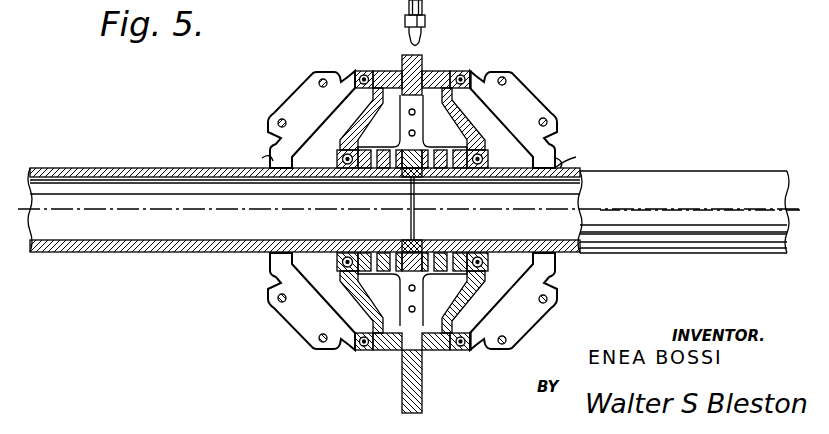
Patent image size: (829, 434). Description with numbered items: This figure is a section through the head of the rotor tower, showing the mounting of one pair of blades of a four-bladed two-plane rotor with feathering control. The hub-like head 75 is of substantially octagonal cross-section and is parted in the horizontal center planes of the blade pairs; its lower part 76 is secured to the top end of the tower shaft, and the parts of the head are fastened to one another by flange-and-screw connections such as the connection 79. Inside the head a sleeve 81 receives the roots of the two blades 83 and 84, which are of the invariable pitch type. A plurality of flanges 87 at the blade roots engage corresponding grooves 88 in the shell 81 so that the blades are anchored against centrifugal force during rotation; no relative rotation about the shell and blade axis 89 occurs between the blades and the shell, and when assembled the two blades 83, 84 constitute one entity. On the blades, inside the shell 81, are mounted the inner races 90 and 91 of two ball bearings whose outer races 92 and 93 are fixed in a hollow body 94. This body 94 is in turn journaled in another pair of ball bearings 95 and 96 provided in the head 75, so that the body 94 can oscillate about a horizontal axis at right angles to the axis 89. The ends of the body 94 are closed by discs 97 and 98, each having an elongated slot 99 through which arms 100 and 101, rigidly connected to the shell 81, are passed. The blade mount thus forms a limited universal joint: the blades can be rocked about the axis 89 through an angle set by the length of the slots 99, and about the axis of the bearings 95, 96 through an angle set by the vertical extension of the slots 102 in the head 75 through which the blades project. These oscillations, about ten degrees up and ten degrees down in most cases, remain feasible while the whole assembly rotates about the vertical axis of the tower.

The head 75 is at (569, 140).
The lower part 76 is at (552, 262).
The flange-and-screw connection 79 is at (532, 311).
The sleeve 81 is at (455, 148).
The blade 83 is at (145, 230).
The blade 84 is at (689, 243).
The flange 87 is at (431, 255).
The groove 88 is at (385, 252).
The shell and blade axis 89 is at (675, 210).
The inner race 90 is at (480, 258).
The inner race 91 is at (337, 260).
The outer race 92 is at (490, 263).
The outer race 93 is at (356, 290).
The hollow body 94 is at (348, 128).
The ball bearing 95 is at (360, 71).
The ball bearing 96 is at (360, 350).
The disc 97 is at (436, 71).
The disc 98 is at (432, 350).
The elongated slot 99 is at (430, 333).
The arm 100 is at (402, 60).
The arm 101 is at (420, 395).
The slot 102 is at (252, 153).